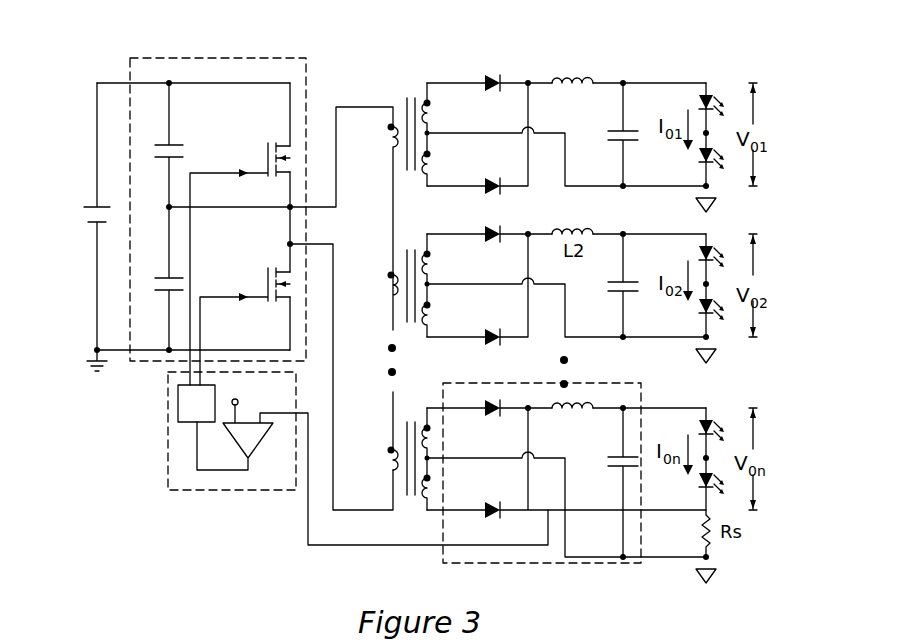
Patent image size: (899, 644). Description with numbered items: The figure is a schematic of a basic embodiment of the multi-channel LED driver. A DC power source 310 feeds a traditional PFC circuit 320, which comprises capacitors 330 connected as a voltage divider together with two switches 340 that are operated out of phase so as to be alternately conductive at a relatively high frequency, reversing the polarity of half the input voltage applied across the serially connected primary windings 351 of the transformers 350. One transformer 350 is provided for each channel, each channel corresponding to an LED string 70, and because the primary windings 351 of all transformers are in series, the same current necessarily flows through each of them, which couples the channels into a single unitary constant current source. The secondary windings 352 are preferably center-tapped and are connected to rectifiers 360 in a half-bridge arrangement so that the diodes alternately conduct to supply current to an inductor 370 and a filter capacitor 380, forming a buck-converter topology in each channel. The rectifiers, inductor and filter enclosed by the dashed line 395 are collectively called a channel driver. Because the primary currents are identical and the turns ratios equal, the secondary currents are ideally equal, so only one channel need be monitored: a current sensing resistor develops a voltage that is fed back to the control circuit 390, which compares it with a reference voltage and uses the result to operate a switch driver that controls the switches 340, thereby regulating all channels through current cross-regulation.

The LED string 70 is at (706, 186).
The DC power source 310 is at (94, 226).
The PFC circuit 320 is at (283, 58).
The capacitors 330 is at (166, 143).
The switches 340 is at (291, 265).
The transformer 350 is at (407, 503).
The primary windings 351 is at (388, 445).
The secondary windings 352 is at (428, 102).
The rectifiers 360 is at (498, 186).
The inductor 370 is at (596, 83).
The filter capacitor 380 is at (633, 130).
The control circuit 390 is at (112, 435).
The channel driver 395 is at (645, 398).